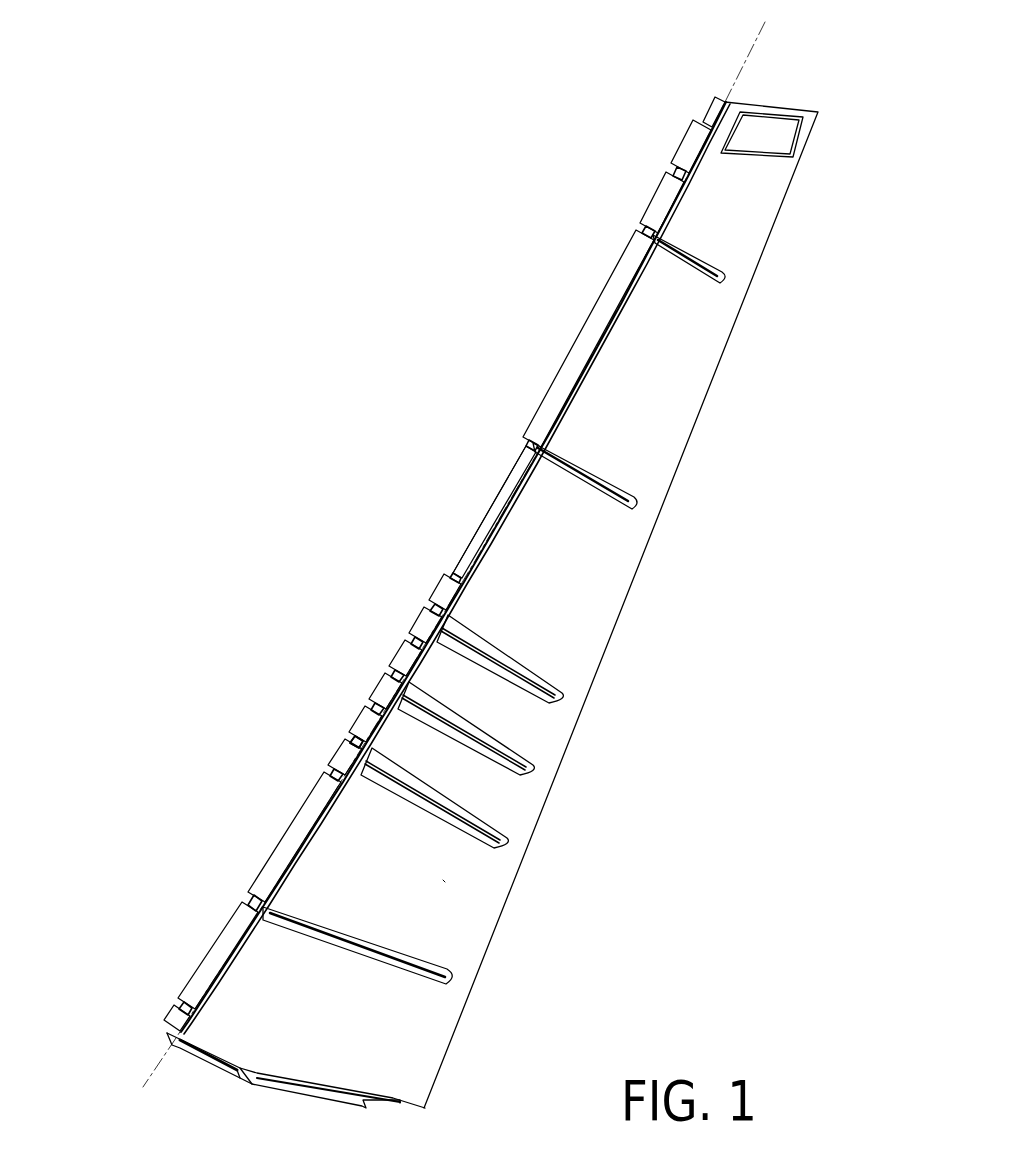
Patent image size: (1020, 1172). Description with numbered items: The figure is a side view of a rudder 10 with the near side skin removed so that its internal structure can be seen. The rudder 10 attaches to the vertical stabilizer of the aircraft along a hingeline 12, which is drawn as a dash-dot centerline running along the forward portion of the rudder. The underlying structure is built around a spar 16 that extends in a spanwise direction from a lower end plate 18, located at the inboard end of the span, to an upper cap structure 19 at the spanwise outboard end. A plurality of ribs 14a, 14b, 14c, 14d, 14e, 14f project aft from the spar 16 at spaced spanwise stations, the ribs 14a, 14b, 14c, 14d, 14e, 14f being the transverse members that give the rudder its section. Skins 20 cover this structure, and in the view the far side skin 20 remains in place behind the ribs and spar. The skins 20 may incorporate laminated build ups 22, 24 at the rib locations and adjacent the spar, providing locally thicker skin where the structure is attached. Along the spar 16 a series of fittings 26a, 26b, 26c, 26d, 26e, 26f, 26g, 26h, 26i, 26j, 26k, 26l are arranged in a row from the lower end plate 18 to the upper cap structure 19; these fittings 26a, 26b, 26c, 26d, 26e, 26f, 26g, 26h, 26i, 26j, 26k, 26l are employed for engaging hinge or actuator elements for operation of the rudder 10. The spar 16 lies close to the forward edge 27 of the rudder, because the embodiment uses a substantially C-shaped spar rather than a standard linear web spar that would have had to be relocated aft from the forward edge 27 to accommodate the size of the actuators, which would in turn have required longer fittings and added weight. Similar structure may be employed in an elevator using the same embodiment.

The rudder 10 is at (545, 258).
The hingeline 12 is at (750, 60).
The rib 14a is at (400, 957).
The rib 14b is at (433, 790).
The rib 14c is at (457, 717).
The rib 14d is at (490, 657).
The rib 14e is at (597, 480).
The rib 14f is at (697, 258).
The spar 16 is at (490, 505).
The end plate 18 is at (272, 1090).
The cap structure 19 is at (757, 110).
The skins 20 is at (552, 550).
The laminated build up 22 is at (443, 880).
The laminated build up 24 is at (352, 735).
The fitting 26a is at (190, 1007).
The fitting 26b is at (257, 908).
The fitting 26c is at (327, 782).
The fitting 26d is at (347, 746).
The fitting 26e is at (363, 710).
The fitting 26f is at (380, 680).
The fitting 26g is at (402, 648).
The fitting 26h is at (418, 617).
The fitting 26i is at (440, 583).
The fitting 26j is at (527, 447).
The fitting 26k is at (650, 237).
The fitting 26l is at (683, 173).
The forward edge 27 is at (462, 538).